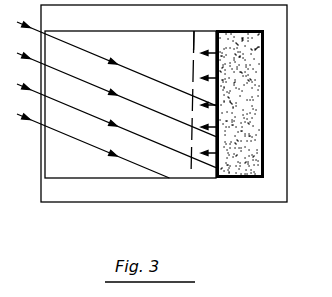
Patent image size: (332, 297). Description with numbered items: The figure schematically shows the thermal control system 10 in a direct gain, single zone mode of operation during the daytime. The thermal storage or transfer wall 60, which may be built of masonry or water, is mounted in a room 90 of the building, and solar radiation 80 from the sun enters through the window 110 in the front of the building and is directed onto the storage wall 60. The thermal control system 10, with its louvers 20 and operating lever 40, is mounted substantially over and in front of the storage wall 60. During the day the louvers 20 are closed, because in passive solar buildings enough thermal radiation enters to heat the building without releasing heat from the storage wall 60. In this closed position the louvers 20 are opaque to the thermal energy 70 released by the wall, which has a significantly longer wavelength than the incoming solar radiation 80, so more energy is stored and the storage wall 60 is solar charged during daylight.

The thermal control system 10 is at (183, 82).
The louvers 20 is at (193, 40).
The operating lever 40 is at (192, 185).
The thermal storage or transfer wall 60 is at (250, 118).
The thermal energy 70 is at (207, 52).
The solar radiation 80 is at (104, 58).
The room 90 is at (112, 173).
The window 110 is at (45, 152).